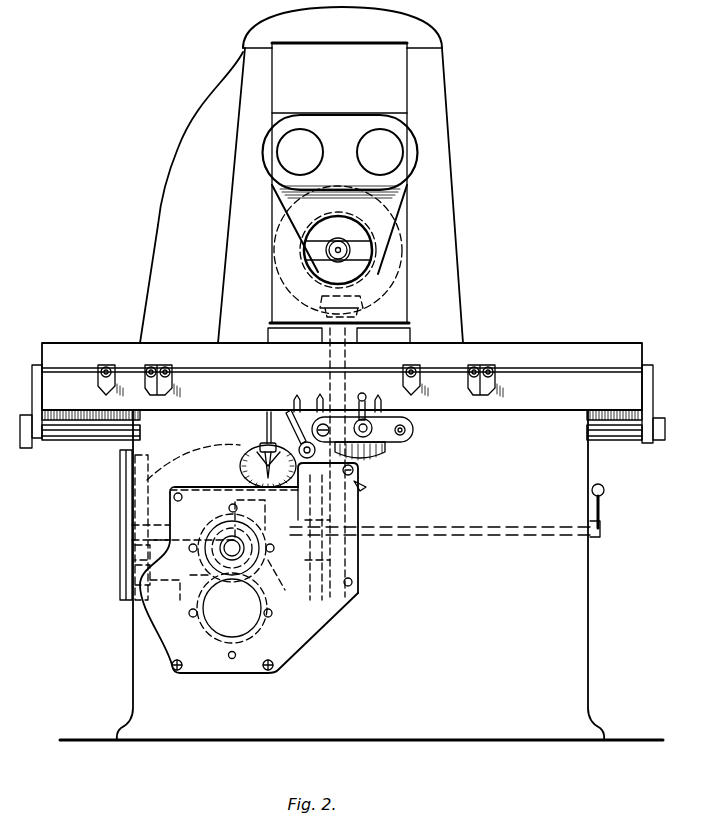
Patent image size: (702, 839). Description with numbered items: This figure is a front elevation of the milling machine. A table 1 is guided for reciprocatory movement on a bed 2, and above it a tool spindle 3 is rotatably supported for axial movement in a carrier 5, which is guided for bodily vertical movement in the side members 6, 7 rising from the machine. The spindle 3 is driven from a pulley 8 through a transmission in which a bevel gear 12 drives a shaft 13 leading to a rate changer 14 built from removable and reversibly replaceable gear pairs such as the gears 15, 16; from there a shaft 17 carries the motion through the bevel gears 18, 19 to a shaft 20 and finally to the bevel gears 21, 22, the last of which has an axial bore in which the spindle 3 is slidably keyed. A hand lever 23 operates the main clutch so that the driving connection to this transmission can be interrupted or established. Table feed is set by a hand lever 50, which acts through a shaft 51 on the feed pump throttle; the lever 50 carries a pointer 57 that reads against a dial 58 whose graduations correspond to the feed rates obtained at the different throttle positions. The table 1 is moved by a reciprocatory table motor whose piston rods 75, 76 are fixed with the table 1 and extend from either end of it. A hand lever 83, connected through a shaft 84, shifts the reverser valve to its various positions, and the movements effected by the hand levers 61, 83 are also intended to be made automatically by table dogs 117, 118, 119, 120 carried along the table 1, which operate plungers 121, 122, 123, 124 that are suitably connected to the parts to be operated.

The table 1 is at (84, 356).
The bed 2 is at (143, 663).
The tool spindle 3 is at (318, 236).
The carrier 5 is at (285, 305).
The side member 6 is at (243, 276).
The side member 7 is at (440, 283).
The pulley 8 is at (197, 453).
The bevel gear 12 is at (193, 583).
The shaft 13 is at (125, 531).
The rate changer 14 is at (118, 549).
The gear 15 is at (118, 571).
The gear 16 is at (128, 488).
The shaft 17 is at (118, 465).
The bevel gear 18 is at (360, 512).
The bevel gear 19 is at (366, 488).
The shaft 20 is at (346, 357).
The bevel gear 21 is at (405, 310).
The bevel gear 22 is at (405, 289).
The hand lever 23 is at (605, 492).
The hand lever 50 is at (262, 421).
The shaft 51 is at (265, 446).
The pointer 57 is at (252, 463).
The dial 58 is at (243, 475).
The hand lever 61 is at (296, 434).
The piston rod 75 is at (77, 441).
The piston rod 76 is at (617, 441).
The hand lever 83 is at (413, 416).
The shaft 84 is at (390, 445).
The table dog 117 is at (108, 390).
The table dog 118 is at (151, 378).
The table dog 119 is at (422, 384).
The table dog 120 is at (488, 371).
The plunger 121 is at (298, 399).
The plunger 122 is at (320, 394).
The plunger 123 is at (350, 403).
The plunger 124 is at (380, 401).